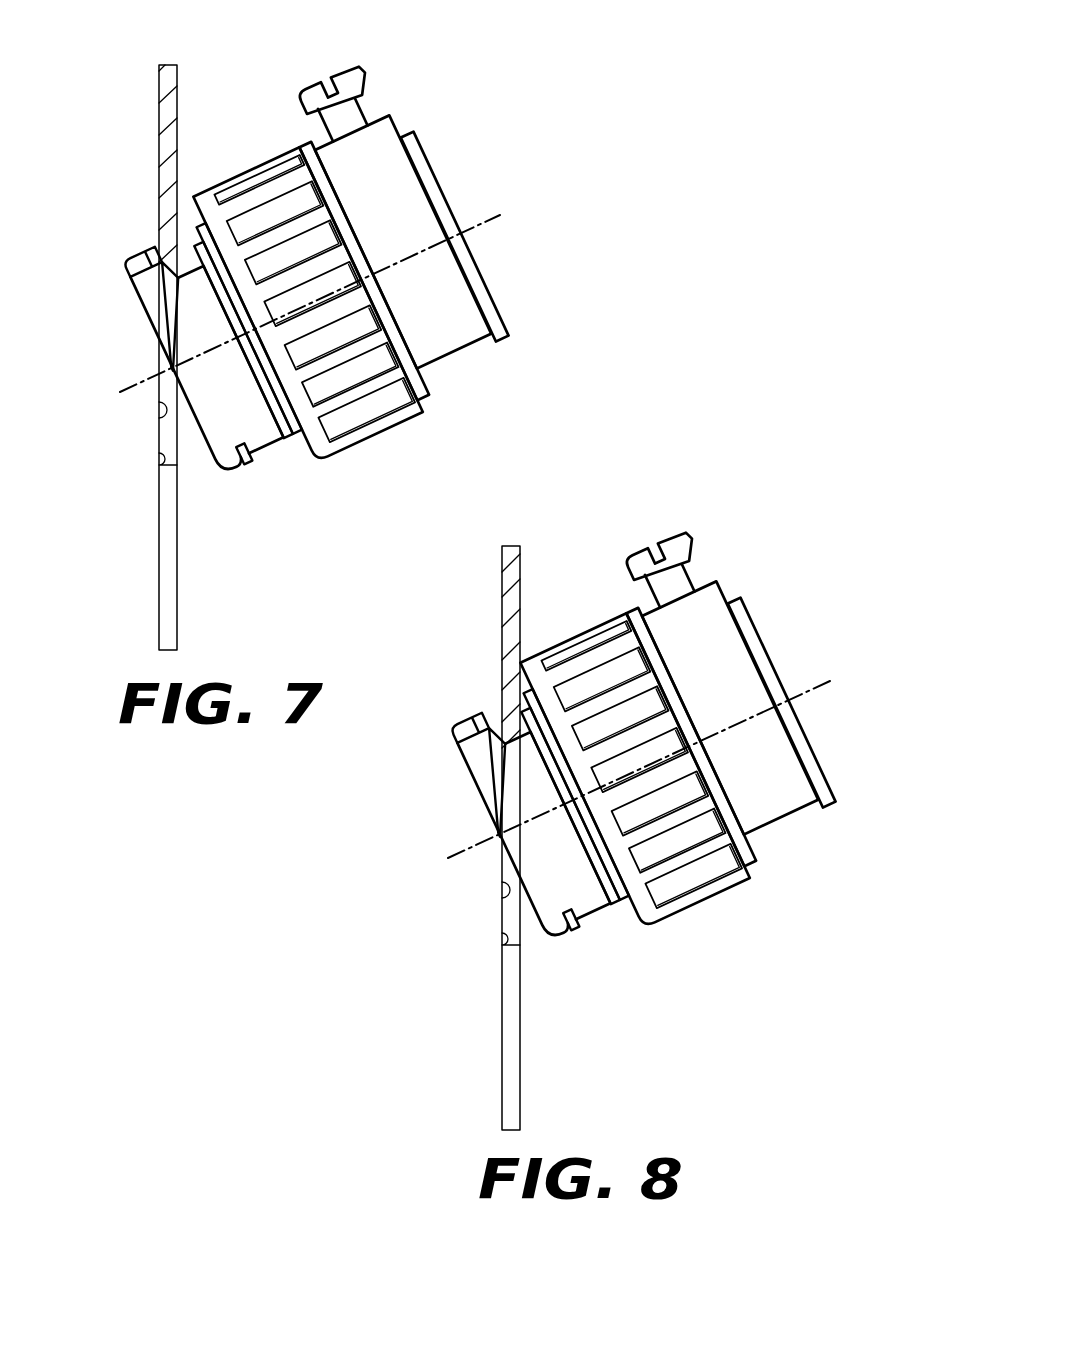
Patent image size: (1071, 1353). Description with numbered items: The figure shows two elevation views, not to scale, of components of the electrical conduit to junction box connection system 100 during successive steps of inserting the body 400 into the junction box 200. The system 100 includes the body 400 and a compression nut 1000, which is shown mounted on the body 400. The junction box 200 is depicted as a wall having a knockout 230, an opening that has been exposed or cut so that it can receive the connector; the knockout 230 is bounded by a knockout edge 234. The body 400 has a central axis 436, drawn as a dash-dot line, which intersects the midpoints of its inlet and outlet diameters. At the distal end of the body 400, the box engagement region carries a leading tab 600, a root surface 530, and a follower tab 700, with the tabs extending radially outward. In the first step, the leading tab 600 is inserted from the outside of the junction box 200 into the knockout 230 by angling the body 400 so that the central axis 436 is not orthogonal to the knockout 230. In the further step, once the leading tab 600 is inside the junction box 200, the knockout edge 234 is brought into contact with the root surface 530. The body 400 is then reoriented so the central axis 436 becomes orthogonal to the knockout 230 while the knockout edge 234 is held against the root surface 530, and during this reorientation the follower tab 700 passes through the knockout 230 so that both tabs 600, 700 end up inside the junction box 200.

In FIG. 7, the electrical conduit to junction box connection system 100 is at (466, 36).
In FIG. 8, the electrical conduit to junction box connection system 100 is at (798, 499).
In FIG. 7, the junction box 200 is at (158, 92).
In FIG. 8, the junction box 200 is at (501, 572).
In FIG. 7, the knockout 230 is at (158, 407).
In FIG. 8, the knockout 230 is at (500, 889).
In FIG. 7, the knockout edge 234 is at (158, 460).
In FIG. 8, the knockout edge 234 is at (500, 942).
In FIG. 7, the body 400 is at (399, 216).
In FIG. 8, the body 400 is at (726, 682).
In FIG. 7, the central axis 436 is at (484, 223).
In FIG. 8, the central axis 436 is at (810, 688).
In FIG. 7, the root surface 530 is at (170, 315).
In FIG. 8, the root surface 530 is at (497, 781).
In FIG. 7, the leading tab 600 is at (142, 262).
In FIG. 8, the leading tab 600 is at (469, 728).
In FIG. 7, the follower tab 700 is at (244, 453).
In FIG. 8, the follower tab 700 is at (571, 919).
In FIG. 7, the compression nut 1000 is at (273, 321).
In FIG. 8, the compression nut 1000 is at (600, 787).